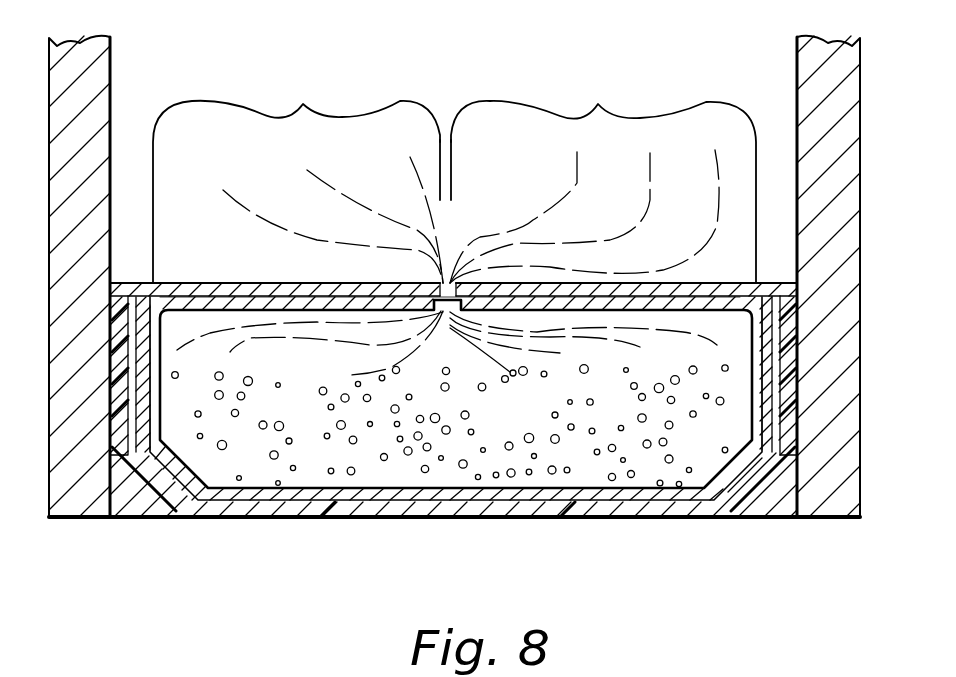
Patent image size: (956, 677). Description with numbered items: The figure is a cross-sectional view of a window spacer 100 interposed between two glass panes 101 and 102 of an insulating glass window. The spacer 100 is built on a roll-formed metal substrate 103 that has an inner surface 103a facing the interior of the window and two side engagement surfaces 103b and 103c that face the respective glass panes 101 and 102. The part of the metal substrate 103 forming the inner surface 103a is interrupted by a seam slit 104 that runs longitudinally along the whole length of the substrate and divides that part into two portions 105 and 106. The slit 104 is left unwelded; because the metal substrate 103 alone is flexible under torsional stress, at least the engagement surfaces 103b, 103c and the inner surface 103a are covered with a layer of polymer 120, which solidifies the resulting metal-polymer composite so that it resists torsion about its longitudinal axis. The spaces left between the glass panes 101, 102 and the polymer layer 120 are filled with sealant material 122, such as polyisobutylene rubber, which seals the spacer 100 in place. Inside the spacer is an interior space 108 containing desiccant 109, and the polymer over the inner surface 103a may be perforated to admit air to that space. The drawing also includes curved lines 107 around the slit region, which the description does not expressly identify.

The window spacer 100 is at (448, 105).
The glass pane 101 is at (110, 92).
The glass pane 102 is at (797, 78).
The roll-formed metal substrate 103 is at (683, 283).
The inner surface 103a is at (240, 283).
The engagement surface 103b is at (106, 432).
The engagement surface 103c is at (787, 460).
The seam slit 104 is at (440, 275).
The portion of inner surface 105 is at (296, 178).
The portion of inner surface 106 is at (603, 178).
The flow lines 107 is at (633, 224).
The interior space 108 is at (293, 465).
The desiccant 109 is at (627, 472).
The layer of polymer 120 is at (193, 283).
The sealant material 122 is at (136, 500).